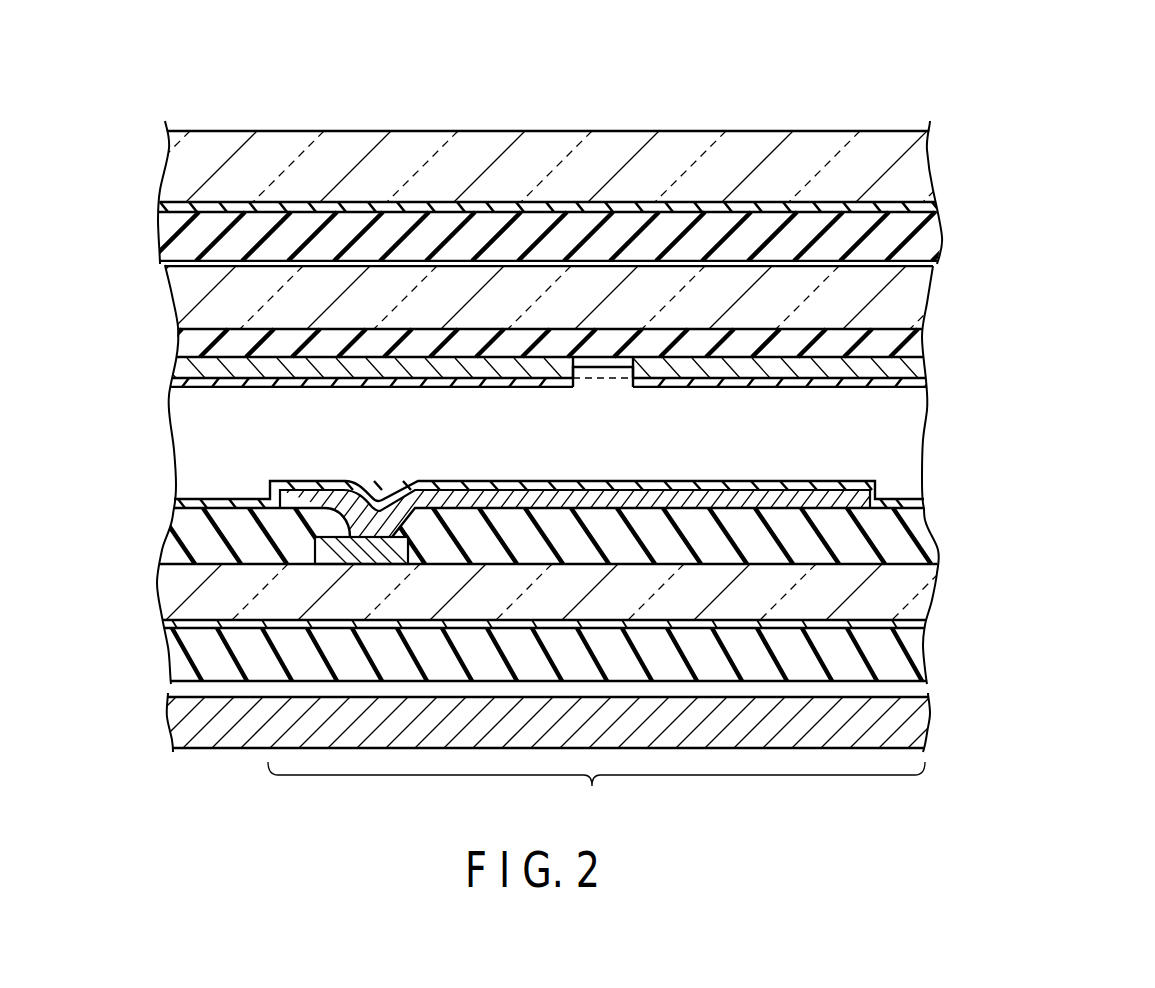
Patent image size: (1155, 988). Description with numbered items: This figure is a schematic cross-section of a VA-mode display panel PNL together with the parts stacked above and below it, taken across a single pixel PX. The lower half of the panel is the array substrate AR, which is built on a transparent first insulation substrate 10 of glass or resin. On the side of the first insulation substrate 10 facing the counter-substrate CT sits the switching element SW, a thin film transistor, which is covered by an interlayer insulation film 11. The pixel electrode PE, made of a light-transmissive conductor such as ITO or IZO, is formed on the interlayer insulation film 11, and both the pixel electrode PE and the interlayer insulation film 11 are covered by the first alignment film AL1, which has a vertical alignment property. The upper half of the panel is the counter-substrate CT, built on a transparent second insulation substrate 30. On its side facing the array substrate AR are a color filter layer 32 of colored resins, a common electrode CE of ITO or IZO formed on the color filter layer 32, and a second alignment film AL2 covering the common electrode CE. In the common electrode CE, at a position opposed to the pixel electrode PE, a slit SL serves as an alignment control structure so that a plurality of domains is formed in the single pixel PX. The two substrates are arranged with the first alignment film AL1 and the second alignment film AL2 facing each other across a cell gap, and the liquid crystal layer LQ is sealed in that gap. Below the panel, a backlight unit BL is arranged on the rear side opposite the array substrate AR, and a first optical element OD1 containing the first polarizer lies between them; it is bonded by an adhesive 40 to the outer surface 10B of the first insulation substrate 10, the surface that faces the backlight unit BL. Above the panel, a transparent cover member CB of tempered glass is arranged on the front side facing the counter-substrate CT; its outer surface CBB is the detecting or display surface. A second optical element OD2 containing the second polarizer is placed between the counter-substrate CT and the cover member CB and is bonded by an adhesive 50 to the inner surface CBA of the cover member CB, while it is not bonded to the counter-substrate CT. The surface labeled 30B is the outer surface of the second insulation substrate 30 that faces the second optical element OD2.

The outer surface of the cover member CBB is at (887, 128).
The cover member CB is at (917, 147).
The inner surface of the cover member CBA is at (900, 214).
The second optical element OD2 is at (920, 235).
The adhesive 50 is at (158, 203).
The outer surface of second substrate 30B is at (217, 259).
The display panel PNL is at (1027, 258).
The counter-substrate CT is at (953, 262).
The second insulation substrate 30 is at (182, 285).
The color filter layer 32 is at (587, 347).
The common electrode CE is at (797, 368).
The slit SL is at (612, 390).
The second alignment film AL2 is at (180, 380).
The liquid crystal layer LQ is at (908, 427).
The array substrate AR is at (953, 492).
The first alignment film AL1 is at (188, 496).
The pixel electrode PE is at (520, 497).
The interlayer insulation film 11 is at (170, 520).
The switching element SW is at (347, 578).
The first insulation substrate 10 is at (173, 583).
The outer surface of the first insulation substrate 10B is at (183, 632).
The adhesive 40 is at (592, 623).
The first optical element OD1 is at (897, 657).
The backlight unit BL is at (912, 725).
The pixel PX is at (596, 792).